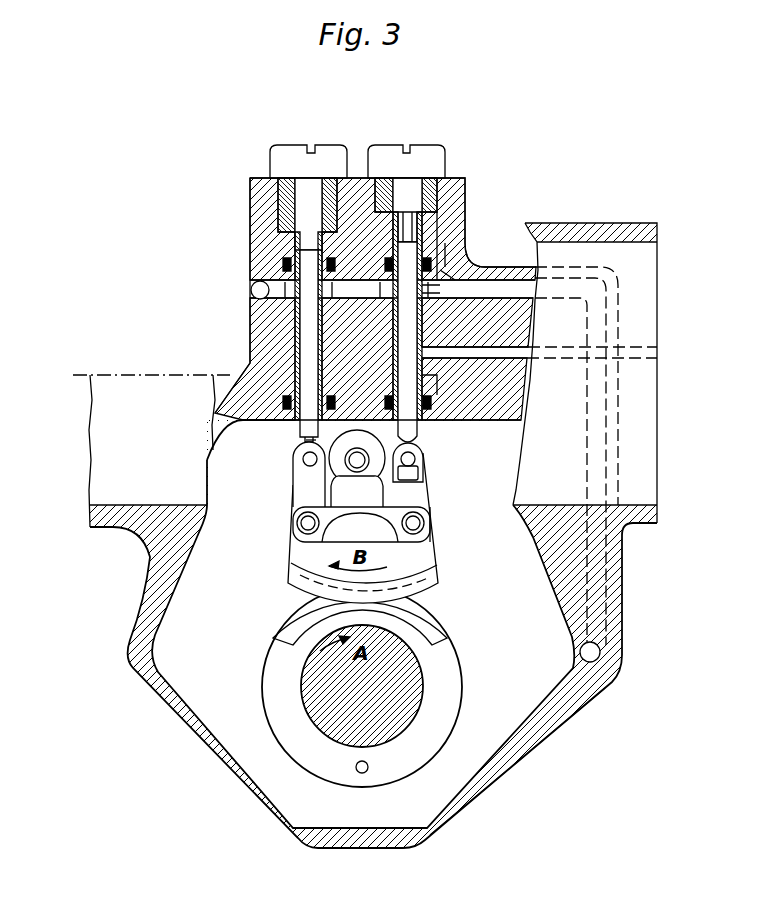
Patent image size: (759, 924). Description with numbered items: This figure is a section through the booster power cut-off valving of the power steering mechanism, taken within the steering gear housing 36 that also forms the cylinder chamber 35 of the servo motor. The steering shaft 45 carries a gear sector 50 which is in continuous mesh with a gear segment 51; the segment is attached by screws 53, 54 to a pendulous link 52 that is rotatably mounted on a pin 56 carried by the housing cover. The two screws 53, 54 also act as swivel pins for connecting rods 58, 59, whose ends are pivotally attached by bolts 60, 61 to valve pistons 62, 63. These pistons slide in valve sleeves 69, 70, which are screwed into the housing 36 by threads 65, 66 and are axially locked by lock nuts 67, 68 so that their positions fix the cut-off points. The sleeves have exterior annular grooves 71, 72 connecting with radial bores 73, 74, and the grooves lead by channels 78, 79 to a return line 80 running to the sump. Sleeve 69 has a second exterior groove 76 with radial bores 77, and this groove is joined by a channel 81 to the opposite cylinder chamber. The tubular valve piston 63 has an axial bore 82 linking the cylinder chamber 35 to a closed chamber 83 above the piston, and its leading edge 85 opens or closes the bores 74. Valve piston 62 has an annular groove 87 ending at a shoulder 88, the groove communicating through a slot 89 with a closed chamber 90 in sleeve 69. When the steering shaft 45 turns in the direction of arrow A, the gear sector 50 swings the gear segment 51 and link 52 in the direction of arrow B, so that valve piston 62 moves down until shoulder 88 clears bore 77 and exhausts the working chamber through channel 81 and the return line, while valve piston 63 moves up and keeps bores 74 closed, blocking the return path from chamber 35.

The cylinder chamber 35 is at (451, 785).
The steering gear housing 36 is at (525, 738).
The steering shaft 45 is at (418, 669).
The gear sector 50 is at (442, 712).
The gear segment 51 is at (427, 578).
The pendulous link 52 is at (350, 441).
The screw 53 is at (424, 524).
The screw 54 is at (305, 526).
The pin 56 is at (346, 464).
The connecting rod 58 is at (420, 497).
The connecting rod 59 is at (300, 499).
The bolt 60 is at (412, 460).
The bolt 61 is at (303, 458).
The valve piston 62 is at (447, 240).
The valve piston 63 is at (300, 352).
The threads 65 is at (383, 195).
The threads 66 is at (280, 212).
The lock nut 67 is at (378, 152).
The lock nut 68 is at (278, 158).
The valve sleeve 69 is at (405, 195).
The valve sleeve 70 is at (334, 185).
The annular groove 71 is at (432, 296).
The annular groove 72 is at (287, 312).
The bore 73 is at (447, 275).
The bore 74 is at (283, 291).
The second exterior groove 76 is at (437, 385).
The bore 77 is at (432, 355).
The channel 78 is at (392, 290).
The channel 79 is at (565, 290).
The return line 80 is at (594, 662).
The channel 81 is at (648, 354).
The axial bore 82 is at (305, 272).
The chamber 83 is at (314, 190).
The leading edge 85 is at (292, 248).
The annular groove 87 is at (450, 252).
The shoulder 88 is at (407, 342).
The slot 89 is at (466, 200).
The chamber 90 is at (415, 218).